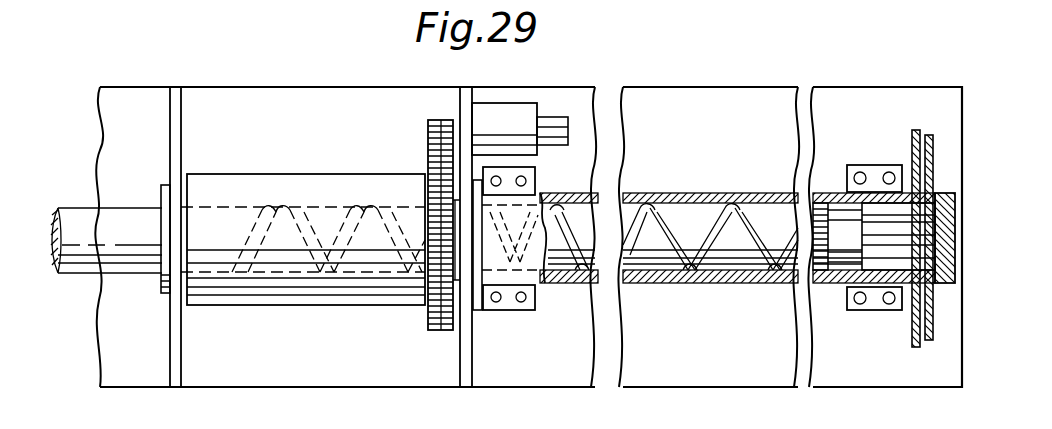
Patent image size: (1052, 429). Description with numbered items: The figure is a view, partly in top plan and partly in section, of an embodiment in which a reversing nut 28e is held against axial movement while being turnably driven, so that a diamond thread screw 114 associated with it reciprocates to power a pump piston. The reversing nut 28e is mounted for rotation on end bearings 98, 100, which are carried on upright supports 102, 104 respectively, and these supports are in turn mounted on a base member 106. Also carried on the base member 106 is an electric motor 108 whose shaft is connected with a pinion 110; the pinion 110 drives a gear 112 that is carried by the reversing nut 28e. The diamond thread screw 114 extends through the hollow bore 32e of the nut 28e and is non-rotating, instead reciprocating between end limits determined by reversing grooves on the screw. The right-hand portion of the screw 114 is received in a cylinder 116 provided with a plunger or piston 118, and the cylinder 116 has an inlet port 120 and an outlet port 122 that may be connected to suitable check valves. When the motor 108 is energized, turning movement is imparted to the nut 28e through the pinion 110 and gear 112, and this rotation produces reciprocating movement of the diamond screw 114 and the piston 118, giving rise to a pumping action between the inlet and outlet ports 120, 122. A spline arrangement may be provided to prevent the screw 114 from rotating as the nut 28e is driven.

The reversing nut 28e is at (352, 161).
The hollow bore 32e is at (256, 207).
The end bearing 98 is at (161, 314).
The end bearing 100 is at (481, 308).
The upright support 102 is at (178, 133).
The upright support 104 is at (462, 100).
The base member 106 is at (270, 362).
The electric motor 108 is at (500, 120).
The pinion 110 is at (428, 133).
The gear 112 is at (440, 330).
The diamond thread screw 114 is at (731, 250).
The cylinder 116 is at (667, 195).
The plunger or piston 118 is at (834, 272).
The inlet port 120 is at (912, 335).
The outlet port 122 is at (920, 153).